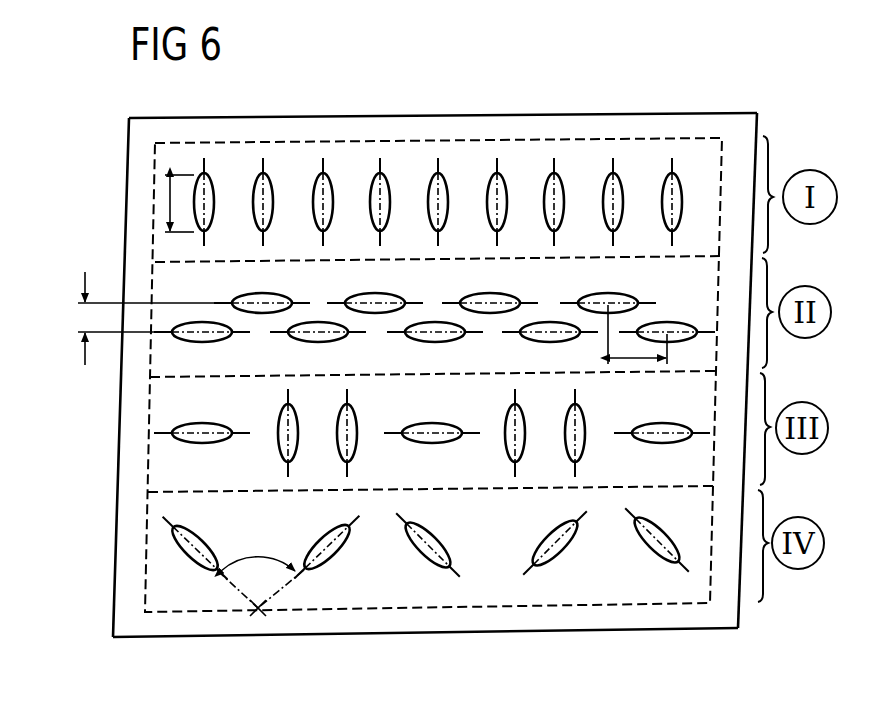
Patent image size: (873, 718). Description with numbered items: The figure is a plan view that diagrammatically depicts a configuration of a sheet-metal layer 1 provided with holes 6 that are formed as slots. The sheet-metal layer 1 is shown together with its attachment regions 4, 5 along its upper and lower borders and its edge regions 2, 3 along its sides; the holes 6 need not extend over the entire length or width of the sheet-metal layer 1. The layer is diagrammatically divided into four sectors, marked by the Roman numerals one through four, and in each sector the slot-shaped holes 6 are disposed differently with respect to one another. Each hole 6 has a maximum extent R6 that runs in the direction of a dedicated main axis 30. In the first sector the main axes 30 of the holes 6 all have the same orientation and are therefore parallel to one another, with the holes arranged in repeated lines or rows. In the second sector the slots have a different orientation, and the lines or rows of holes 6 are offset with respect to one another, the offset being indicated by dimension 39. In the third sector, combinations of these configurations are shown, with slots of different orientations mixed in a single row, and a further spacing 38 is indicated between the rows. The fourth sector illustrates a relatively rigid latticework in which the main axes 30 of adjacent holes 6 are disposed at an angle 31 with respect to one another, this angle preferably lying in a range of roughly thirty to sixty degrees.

The sheet-metal layer 1 is at (563, 128).
The edge region 2 is at (140, 177).
The edge region 3 is at (737, 150).
The attachment region 4 is at (652, 115).
The attachment region 5 is at (620, 620).
The hole 6 is at (500, 195).
The main axis 30 is at (267, 167).
The angle 31 is at (260, 557).
The row separation 38 is at (407, 163).
The spacing between openings 39 is at (87, 322).
The maximum extent R6 is at (163, 203).